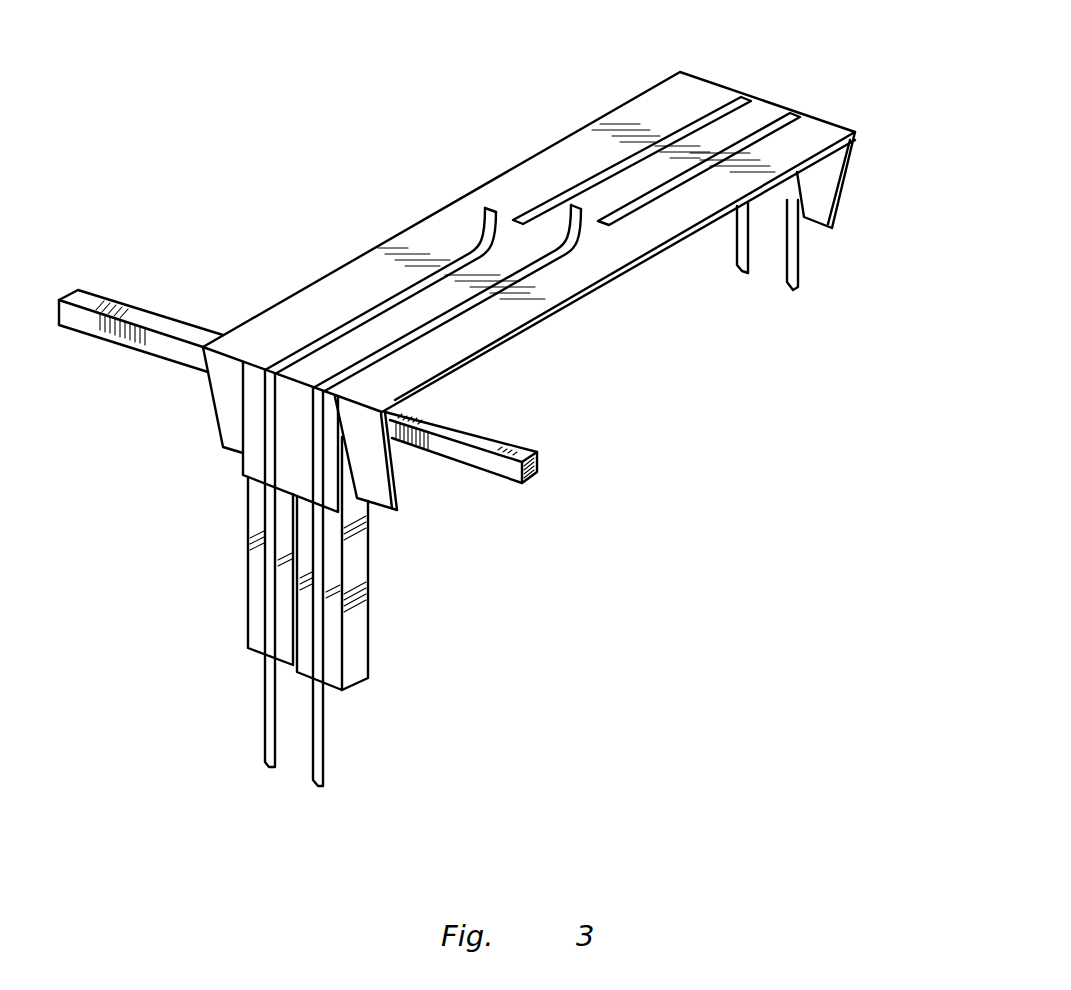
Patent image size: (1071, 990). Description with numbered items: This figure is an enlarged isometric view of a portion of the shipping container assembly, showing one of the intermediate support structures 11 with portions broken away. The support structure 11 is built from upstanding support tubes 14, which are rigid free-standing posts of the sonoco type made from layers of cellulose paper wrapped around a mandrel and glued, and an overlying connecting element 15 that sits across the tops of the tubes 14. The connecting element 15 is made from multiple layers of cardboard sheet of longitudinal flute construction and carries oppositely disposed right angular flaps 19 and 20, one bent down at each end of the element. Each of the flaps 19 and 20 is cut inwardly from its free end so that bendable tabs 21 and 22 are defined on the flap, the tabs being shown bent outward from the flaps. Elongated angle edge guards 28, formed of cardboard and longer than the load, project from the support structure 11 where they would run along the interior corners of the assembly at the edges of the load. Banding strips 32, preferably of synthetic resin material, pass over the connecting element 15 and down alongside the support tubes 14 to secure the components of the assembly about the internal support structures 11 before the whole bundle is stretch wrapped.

The intermediate support structure 11 is at (717, 79).
The upstanding support tube 14 is at (253, 610).
The overlying connecting element 15 is at (530, 180).
The right angular flap 19 is at (253, 408).
The right angular flap 20 is at (800, 178).
The bendable tab 21 is at (217, 445).
The bendable tab 22 is at (400, 481).
The elongated angle edge guard 28 is at (467, 434).
The banding strip 32 is at (373, 306).